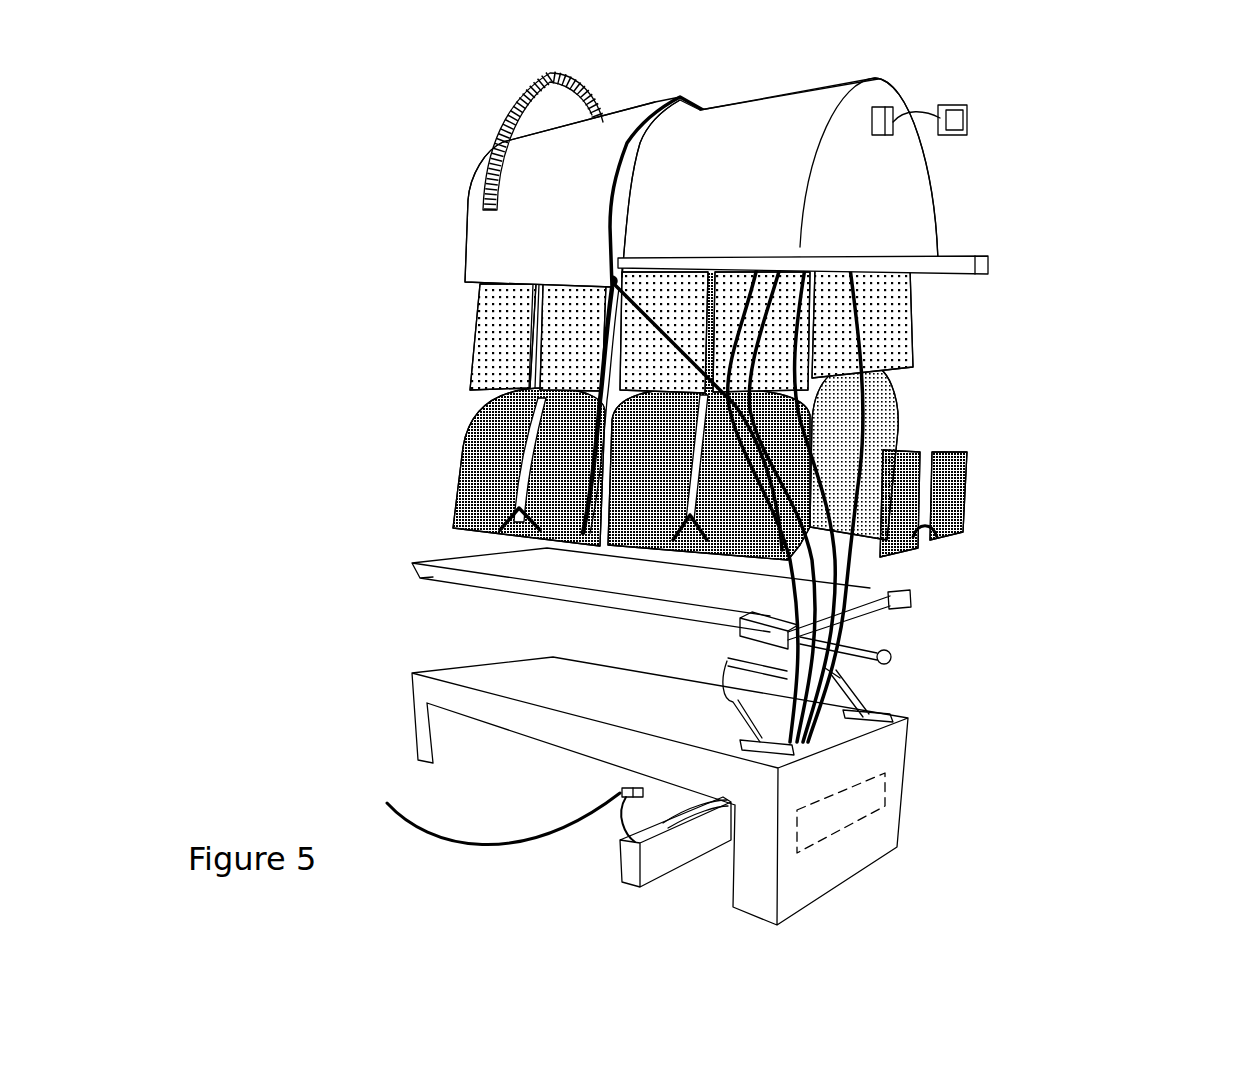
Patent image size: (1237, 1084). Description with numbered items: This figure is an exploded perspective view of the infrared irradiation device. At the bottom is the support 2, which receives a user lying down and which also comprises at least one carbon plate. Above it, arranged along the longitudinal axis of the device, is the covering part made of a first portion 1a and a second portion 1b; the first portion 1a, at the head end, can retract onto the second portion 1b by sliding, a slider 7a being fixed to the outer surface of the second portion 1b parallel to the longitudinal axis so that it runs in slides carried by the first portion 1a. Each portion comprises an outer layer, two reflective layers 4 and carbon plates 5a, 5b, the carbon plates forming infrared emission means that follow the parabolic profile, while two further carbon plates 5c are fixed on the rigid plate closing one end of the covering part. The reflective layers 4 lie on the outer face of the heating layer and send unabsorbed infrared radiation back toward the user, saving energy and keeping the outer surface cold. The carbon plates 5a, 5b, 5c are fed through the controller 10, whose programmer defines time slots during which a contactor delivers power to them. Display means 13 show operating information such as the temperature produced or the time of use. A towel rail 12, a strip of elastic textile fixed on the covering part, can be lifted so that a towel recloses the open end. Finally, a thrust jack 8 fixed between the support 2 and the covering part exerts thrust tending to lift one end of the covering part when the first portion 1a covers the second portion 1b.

The first portion 1a is at (505, 253).
The second portion 1b is at (773, 143).
The support 2 is at (410, 537).
The reflective layer 4 is at (553, 323).
The carbon plate 5a is at (550, 460).
The carbon plate 5b is at (777, 480).
The carbon plate 5c is at (955, 490).
The slider 7a is at (973, 268).
The thrust jack 8 is at (735, 683).
The controller 10 is at (650, 865).
The towel rail 12 is at (492, 116).
The display means 13 is at (970, 117).